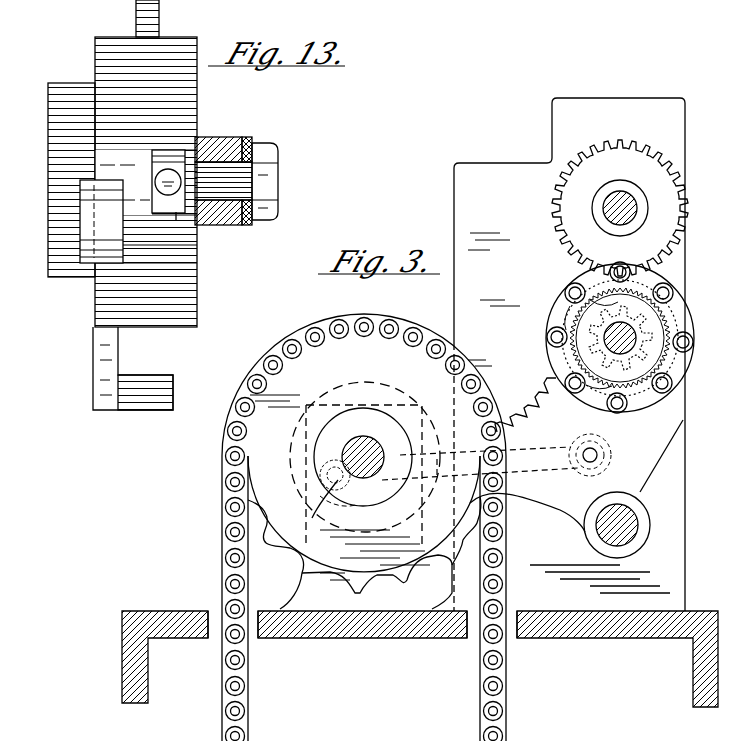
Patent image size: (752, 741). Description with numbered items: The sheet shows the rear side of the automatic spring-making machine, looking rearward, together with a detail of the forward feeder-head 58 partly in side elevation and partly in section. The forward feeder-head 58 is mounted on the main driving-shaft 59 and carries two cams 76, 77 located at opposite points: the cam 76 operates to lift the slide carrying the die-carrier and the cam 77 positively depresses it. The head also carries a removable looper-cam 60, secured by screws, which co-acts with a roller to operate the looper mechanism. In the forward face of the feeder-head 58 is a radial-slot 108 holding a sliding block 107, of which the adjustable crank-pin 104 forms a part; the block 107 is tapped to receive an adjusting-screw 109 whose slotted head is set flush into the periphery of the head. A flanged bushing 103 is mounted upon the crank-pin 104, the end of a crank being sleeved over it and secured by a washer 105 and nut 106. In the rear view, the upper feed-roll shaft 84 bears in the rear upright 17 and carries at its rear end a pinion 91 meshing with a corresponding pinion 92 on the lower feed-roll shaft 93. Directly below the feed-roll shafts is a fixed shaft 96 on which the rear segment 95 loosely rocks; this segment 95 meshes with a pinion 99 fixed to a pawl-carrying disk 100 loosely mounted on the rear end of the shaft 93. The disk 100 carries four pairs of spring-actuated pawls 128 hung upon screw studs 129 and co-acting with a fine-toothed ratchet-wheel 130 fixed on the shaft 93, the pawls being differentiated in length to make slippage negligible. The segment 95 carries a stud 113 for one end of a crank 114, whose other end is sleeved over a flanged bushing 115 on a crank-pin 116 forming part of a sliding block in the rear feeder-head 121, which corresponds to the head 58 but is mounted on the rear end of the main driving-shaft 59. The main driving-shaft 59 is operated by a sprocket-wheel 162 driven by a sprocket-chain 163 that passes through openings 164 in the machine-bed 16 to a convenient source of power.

In FIG. 13, the cam 76 is at (160, 20).
In FIG. 13, the forward feeder-head 58 is at (198, 90).
In FIG. 13, the looper-cam 60 is at (90, 210).
In FIG. 13, the radial-slot 108 is at (152, 192).
In FIG. 13, the adjusting-screw 109 is at (172, 178).
In FIG. 13, the sliding block 107 is at (176, 212).
In FIG. 13, the flanged bushing 103 is at (212, 226).
In FIG. 13, the washer 105 is at (250, 225).
In FIG. 13, the adjustable crank-pin 104 is at (250, 182).
In FIG. 13, the nut 106 is at (270, 176).
In FIG. 13, the cam 77 is at (152, 390).
In FIG. 3, the rear upright 17 is at (513, 251).
In FIG. 3, the pinion 91 is at (631, 146).
In FIG. 3, the upper feed-roll shaft 84 is at (605, 208).
In FIG. 3, the pinion 99 is at (660, 318).
In FIG. 3, the pawl-carrying disk 100 is at (557, 305).
In FIG. 3, the pinion 92 is at (697, 300).
In FIG. 3, the lower feed-roll shaft 93 is at (650, 332).
In FIG. 3, the fine-toothed ratchet-wheel 130 is at (592, 348).
In FIG. 3, the spring-actuated pawls 128 is at (563, 288).
In FIG. 3, the screw studs 129 is at (574, 283).
In FIG. 3, the rear segment 95 is at (576, 485).
In FIG. 3, the stud 113 is at (590, 463).
In FIG. 3, the crank 114 is at (516, 470).
In FIG. 3, the fixed shaft 96 is at (600, 531).
In FIG. 3, the sprocket-wheel 162 is at (364, 483).
In FIG. 3, the feeder-head 121 is at (403, 394).
In FIG. 3, the main driving-shaft 59 is at (363, 457).
In FIG. 3, the flanged bushing 115 is at (346, 491).
In FIG. 3, the crank-pin 116 is at (318, 509).
In FIG. 3, the sprocket-chain 163 is at (232, 559).
In FIG. 3, the machine-bed 16 is at (415, 636).
In FIG. 3, the openings 164 is at (216, 612).